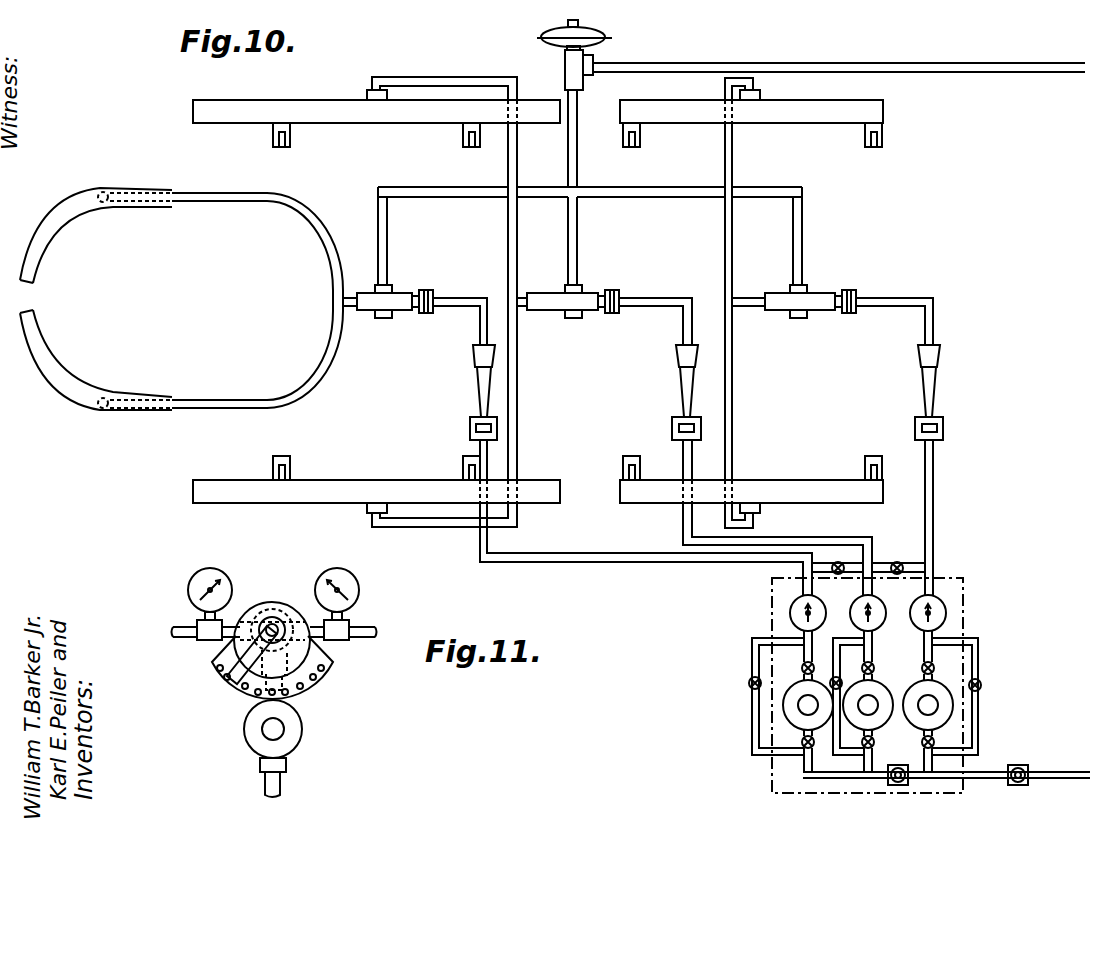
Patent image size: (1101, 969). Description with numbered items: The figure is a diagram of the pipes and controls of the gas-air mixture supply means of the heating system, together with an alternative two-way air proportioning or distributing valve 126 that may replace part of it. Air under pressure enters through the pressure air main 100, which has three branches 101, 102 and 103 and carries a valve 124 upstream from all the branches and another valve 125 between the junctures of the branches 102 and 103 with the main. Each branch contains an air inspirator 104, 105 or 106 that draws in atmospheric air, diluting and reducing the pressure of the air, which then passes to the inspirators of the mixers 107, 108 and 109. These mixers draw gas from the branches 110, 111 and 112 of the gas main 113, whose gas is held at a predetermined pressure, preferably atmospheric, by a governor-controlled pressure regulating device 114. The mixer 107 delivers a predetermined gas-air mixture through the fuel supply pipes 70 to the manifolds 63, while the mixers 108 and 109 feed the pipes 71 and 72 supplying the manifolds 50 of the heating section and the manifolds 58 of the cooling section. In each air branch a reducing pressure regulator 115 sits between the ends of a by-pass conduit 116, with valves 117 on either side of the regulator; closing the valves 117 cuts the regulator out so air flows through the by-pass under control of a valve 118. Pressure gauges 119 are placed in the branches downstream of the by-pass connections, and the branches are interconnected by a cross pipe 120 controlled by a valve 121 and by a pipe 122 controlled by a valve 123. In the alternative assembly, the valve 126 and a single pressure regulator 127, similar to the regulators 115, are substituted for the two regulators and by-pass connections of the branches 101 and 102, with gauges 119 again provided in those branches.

In FIG. 10, the manifold 50 is at (303, 100).
In FIG. 10, the manifold 58 is at (795, 108).
In FIG. 10, the manifold 63 is at (62, 218).
In FIG. 10, the fuel supply pipe 70 is at (215, 194).
In FIG. 10, the fuel supply pipe 71 is at (432, 78).
In FIG. 10, the fuel supply pipe 72 is at (735, 146).
In FIG. 10, the pressure air main 100 is at (1045, 780).
In FIG. 11, the pressure air main 100 is at (282, 786).
In FIG. 10, the air main branch 101 is at (655, 563).
In FIG. 11, the air main branch 101 is at (180, 639).
In FIG. 10, the air main branch 102 is at (778, 540).
In FIG. 11, the air main branch 102 is at (368, 628).
In FIG. 10, the air main branch 103 is at (933, 508).
In FIG. 10, the air inspirator 104 is at (478, 393).
In FIG. 10, the air inspirator 105 is at (683, 395).
In FIG. 10, the air inspirator 106 is at (922, 385).
In FIG. 10, the mixer 107 is at (398, 312).
In FIG. 10, the mixer 108 is at (580, 318).
In FIG. 10, the mixer 109 is at (812, 318).
In FIG. 10, the gas main branch 110 is at (388, 256).
In FIG. 10, the gas main branch 111 is at (578, 248).
In FIG. 10, the gas main branch 112 is at (803, 236).
In FIG. 10, the gas main 113 is at (578, 160).
In FIG. 10, the governor-controlled pressure regulating device 114 is at (590, 62).
In FIG. 10, the reducing pressure regulator 115 is at (790, 713).
In FIG. 10, the by-pass conduit 116 is at (838, 660).
In FIG. 10, the valve 117 is at (802, 668).
In FIG. 10, the by-pass valve 118 is at (837, 677).
In FIG. 10, the pressure gauge 119 is at (790, 617).
In FIG. 11, the pressure gauge 119 is at (190, 590).
In FIG. 10, the cross pipe 120 is at (812, 572).
In FIG. 10, the valve 121 is at (840, 562).
In FIG. 10, the cross connection pipe 122 is at (928, 566).
In FIG. 10, the valve 123 is at (898, 562).
In FIG. 10, the air main valve 124 is at (1012, 786).
In FIG. 10, the air main valve 125 is at (897, 786).
In FIG. 11, the two-way air proportioning valve 126 is at (270, 604).
In FIG. 11, the pressure regulator 127 is at (245, 733).